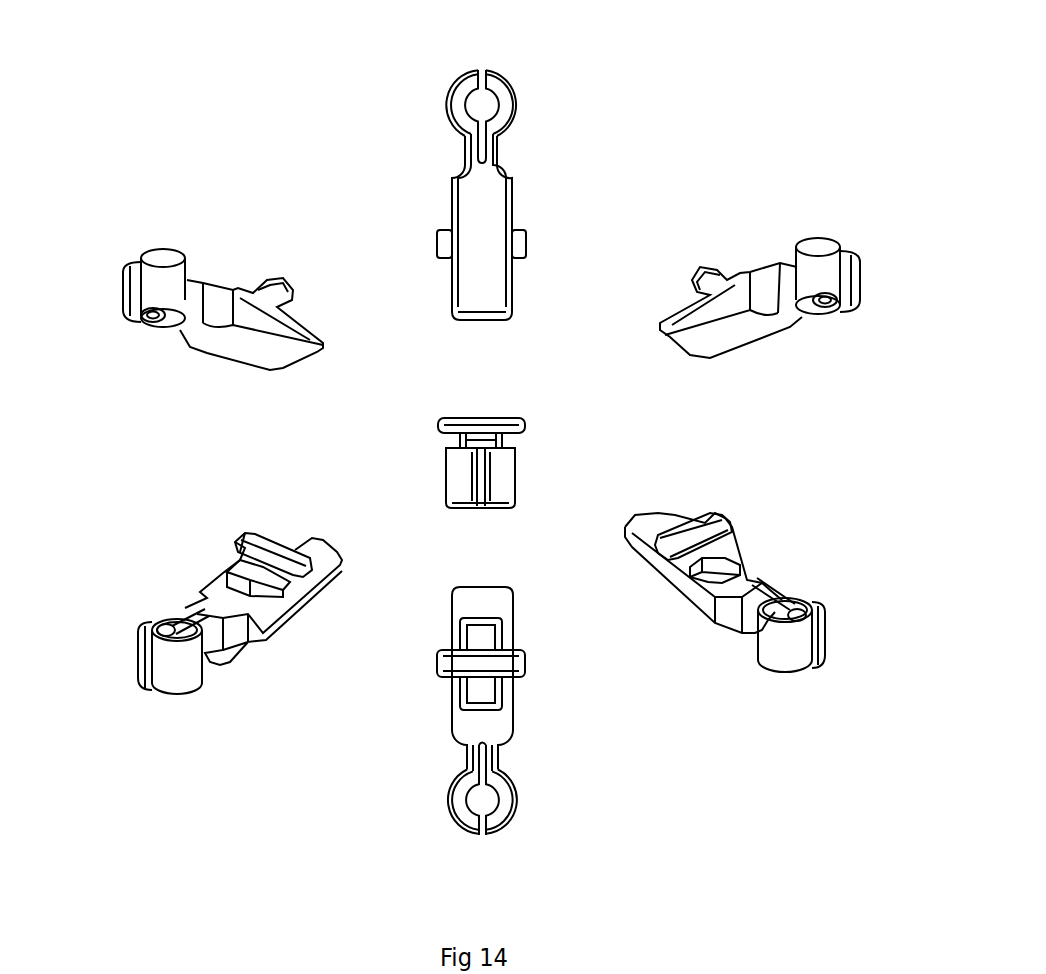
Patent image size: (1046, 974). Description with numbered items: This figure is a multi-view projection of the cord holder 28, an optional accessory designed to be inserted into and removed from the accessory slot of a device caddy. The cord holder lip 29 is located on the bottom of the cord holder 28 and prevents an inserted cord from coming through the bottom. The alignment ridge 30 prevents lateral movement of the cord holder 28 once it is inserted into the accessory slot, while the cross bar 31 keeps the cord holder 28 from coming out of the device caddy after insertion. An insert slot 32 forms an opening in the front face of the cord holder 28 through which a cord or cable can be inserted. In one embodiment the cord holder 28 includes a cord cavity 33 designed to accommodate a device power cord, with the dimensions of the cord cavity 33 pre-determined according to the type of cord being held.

The cord holder 28 is at (522, 462).
The cord holder lip 29 is at (503, 85).
The alignment ridge 30 is at (742, 548).
The cross bar 31 is at (257, 523).
The insert slot 32 is at (485, 833).
The cord cavity 33 is at (153, 615).